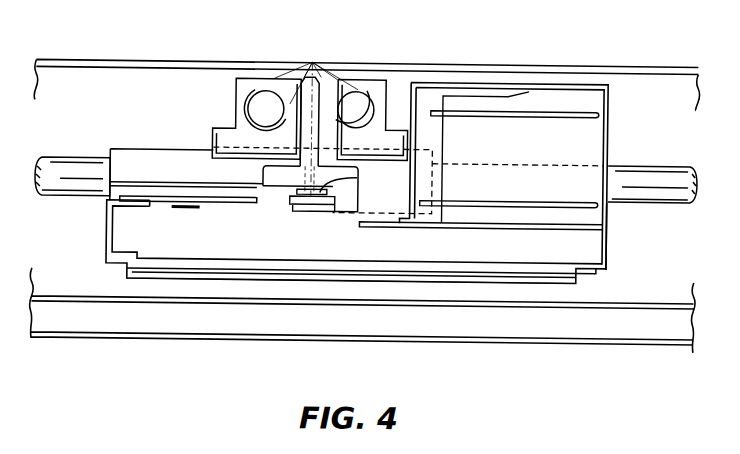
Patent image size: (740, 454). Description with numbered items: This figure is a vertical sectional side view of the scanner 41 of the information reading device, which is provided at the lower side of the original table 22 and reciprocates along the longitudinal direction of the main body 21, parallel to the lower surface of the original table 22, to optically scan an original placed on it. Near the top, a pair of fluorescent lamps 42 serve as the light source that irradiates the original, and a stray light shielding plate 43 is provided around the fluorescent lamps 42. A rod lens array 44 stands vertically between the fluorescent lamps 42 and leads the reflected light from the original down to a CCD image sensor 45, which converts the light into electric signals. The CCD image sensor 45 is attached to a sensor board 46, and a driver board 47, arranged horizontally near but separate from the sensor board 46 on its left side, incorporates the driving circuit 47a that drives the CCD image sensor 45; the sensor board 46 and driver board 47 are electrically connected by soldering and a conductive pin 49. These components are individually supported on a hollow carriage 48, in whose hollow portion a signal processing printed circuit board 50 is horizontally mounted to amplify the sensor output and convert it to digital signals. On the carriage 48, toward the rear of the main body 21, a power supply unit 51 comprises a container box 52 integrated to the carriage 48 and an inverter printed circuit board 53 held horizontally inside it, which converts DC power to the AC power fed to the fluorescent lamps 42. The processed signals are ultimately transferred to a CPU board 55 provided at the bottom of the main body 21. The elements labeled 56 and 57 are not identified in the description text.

The main body 21 is at (267, 342).
The original table 22 is at (578, 63).
The scanner 41 is at (390, 282).
The fluorescent lamps 42 is at (265, 92).
The stray light shielding plate 43 is at (235, 88).
The rod lens array 44 is at (311, 63).
The CCD image sensor 45 is at (358, 178).
The sensor board 46 is at (302, 212).
The driver board 47 is at (162, 208).
The driving circuit 47a is at (185, 211).
The carriage 48 is at (107, 242).
The conductive pin 49 is at (250, 185).
The signal processing printed circuit board 50 is at (470, 264).
The power supply unit 51 is at (609, 126).
The container box 52 is at (608, 215).
The inverter printed circuit board 53 is at (550, 200).
The CPU board 55 is at (545, 301).
The block 56 is at (158, 152).
The rod 57 is at (62, 161).